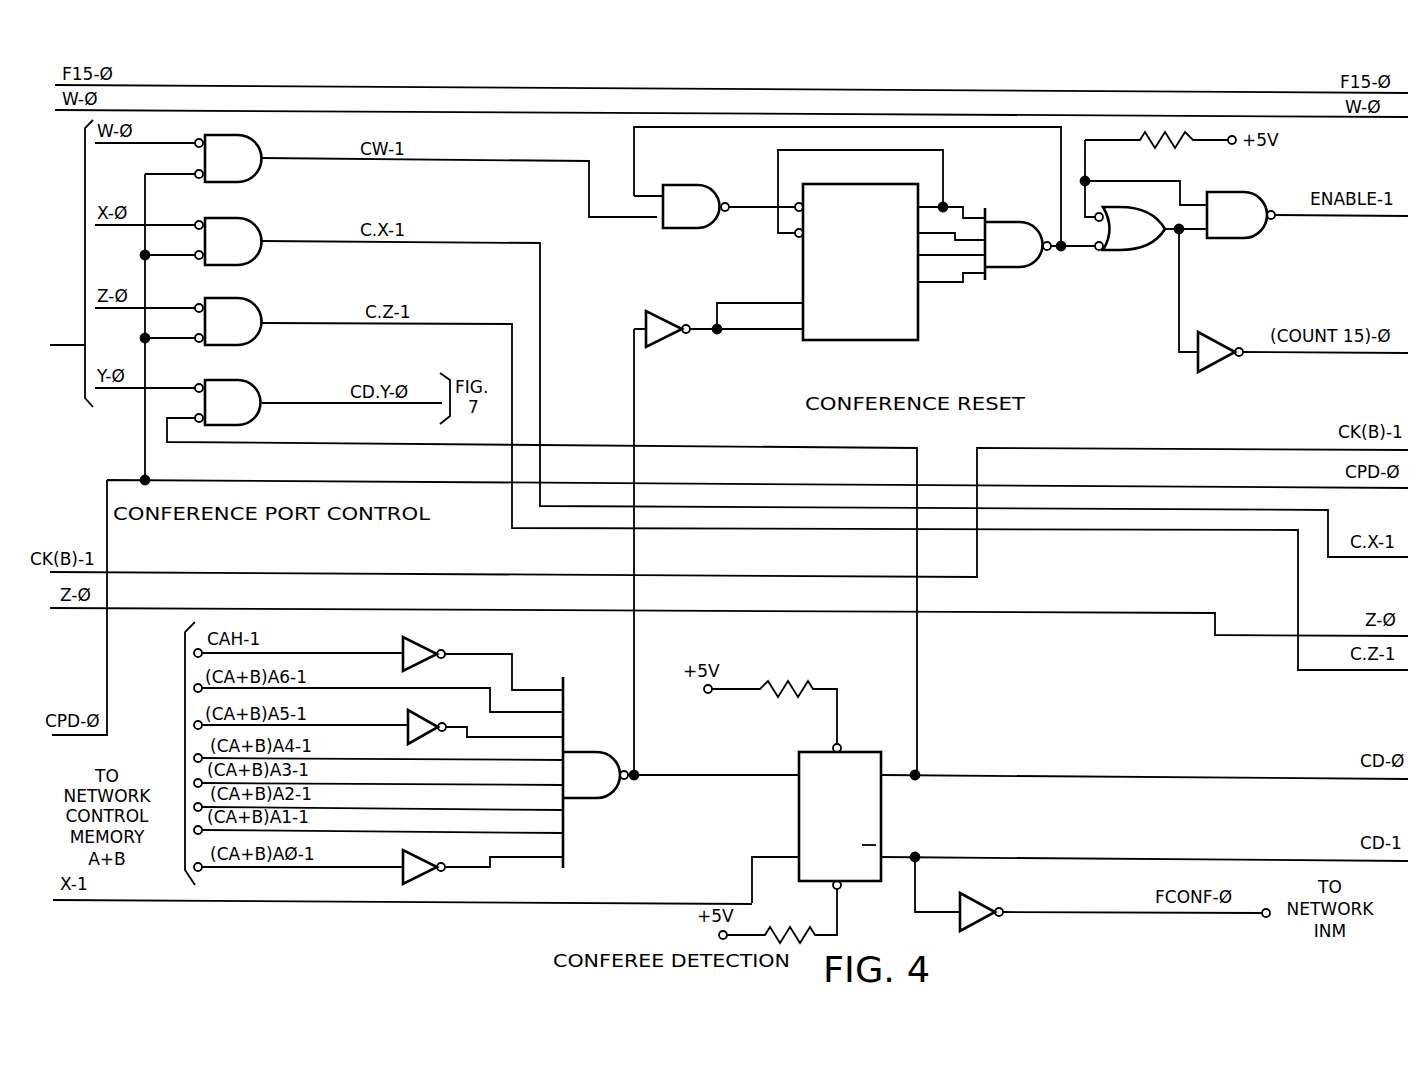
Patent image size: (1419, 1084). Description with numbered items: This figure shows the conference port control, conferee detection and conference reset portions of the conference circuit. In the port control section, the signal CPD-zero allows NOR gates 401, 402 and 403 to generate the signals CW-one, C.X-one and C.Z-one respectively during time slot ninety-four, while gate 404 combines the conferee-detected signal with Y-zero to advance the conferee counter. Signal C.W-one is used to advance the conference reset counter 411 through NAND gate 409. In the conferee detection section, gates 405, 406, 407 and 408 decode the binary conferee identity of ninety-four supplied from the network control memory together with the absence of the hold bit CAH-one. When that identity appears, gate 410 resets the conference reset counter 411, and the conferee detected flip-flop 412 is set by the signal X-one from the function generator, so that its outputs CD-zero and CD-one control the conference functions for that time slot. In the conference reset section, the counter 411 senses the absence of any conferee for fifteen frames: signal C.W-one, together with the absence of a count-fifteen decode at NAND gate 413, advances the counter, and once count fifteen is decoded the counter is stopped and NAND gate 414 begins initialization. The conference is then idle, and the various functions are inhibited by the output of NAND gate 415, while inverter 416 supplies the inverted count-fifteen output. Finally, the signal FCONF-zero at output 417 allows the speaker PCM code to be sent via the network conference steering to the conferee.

The NOR gate 401 is at (250, 137).
The NOR gate 402 is at (250, 220).
The NOR gate 403 is at (262, 289).
The gate 404 is at (262, 371).
The gate 405 is at (428, 640).
The gate 406 is at (430, 713).
The gate 407 is at (428, 855).
The gate 408 is at (578, 752).
The NAND gate 409 is at (700, 186).
The gate 410 is at (655, 313).
The conference reset counter 411 is at (878, 341).
The conferee detected flip-flop 412 is at (852, 752).
The NAND gate 413 is at (1012, 270).
The NAND gate 414 is at (1125, 251).
The NAND gate 415 is at (1235, 239).
The inverter 416 is at (1208, 373).
The FCONF-0 signal output 417 is at (968, 897).